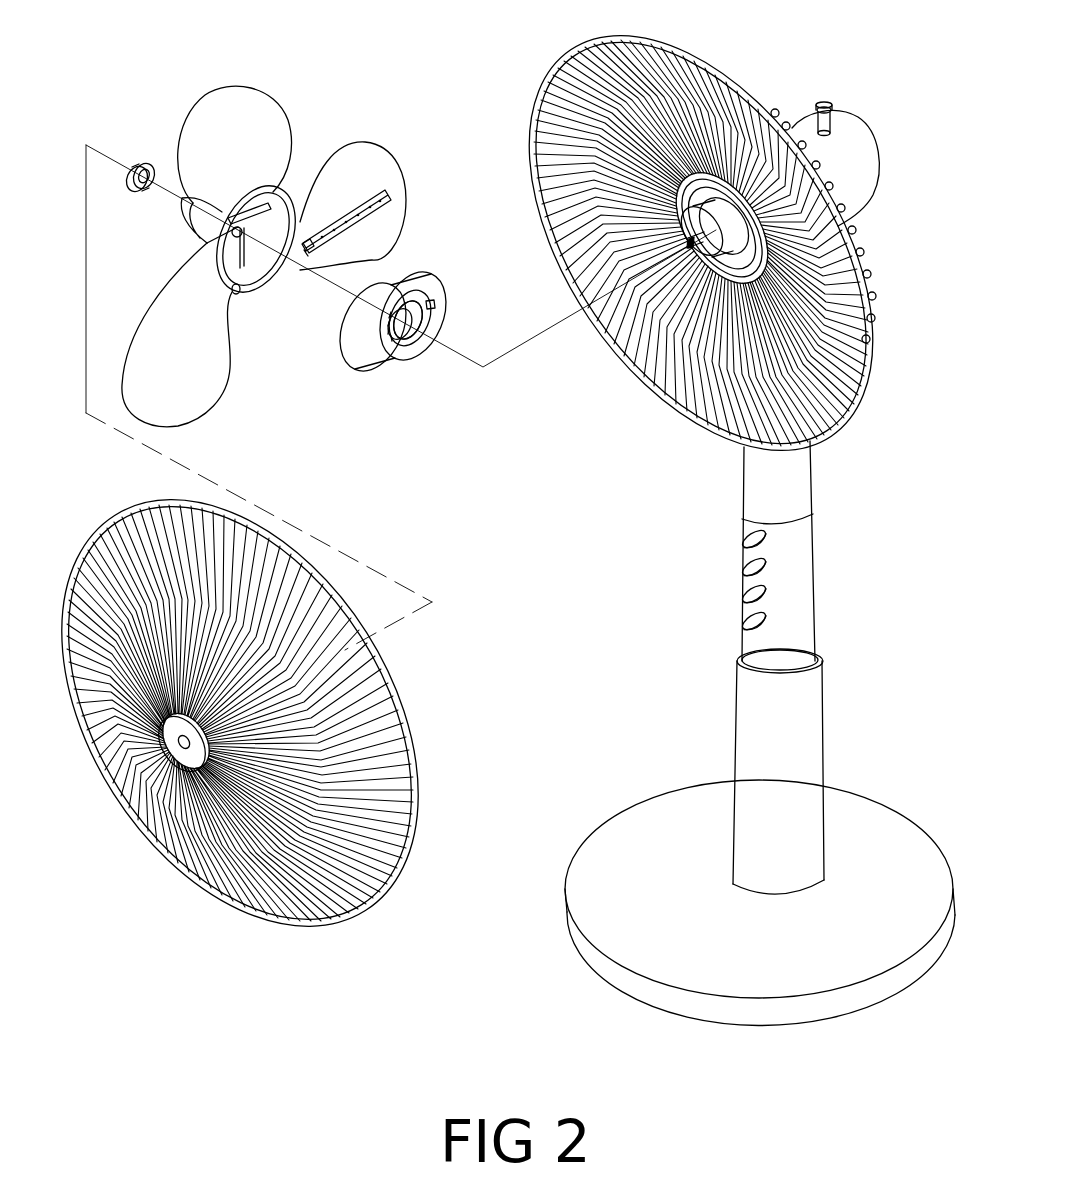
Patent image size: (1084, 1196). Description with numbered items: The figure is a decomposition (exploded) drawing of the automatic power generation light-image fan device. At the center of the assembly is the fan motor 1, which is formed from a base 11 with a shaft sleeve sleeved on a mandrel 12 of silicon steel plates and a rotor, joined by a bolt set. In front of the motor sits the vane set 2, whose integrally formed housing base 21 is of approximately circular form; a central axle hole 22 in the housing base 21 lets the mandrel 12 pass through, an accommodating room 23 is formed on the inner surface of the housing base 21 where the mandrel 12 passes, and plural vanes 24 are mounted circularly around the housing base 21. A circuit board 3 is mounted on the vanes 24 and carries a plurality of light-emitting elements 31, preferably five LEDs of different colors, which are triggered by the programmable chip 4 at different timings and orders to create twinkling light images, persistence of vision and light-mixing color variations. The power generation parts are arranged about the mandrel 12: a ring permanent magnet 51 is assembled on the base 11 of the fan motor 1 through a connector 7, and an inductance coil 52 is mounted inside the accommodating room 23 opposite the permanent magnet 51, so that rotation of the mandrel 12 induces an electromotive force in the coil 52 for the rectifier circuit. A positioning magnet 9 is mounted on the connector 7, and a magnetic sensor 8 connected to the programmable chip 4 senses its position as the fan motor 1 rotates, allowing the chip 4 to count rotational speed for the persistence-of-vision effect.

The fan motor 1 is at (834, 179).
The base 11 is at (852, 198).
The mandrel 12 is at (600, 327).
The vane set 2 is at (164, 153).
The housing base 21 is at (205, 222).
The axle hole 22 is at (232, 262).
The accommodating room 23 is at (305, 218).
The vanes 24 is at (250, 105).
The circuit board 3 is at (386, 195).
The light-emitting elements 31 is at (392, 205).
The programmable chip 4 is at (318, 252).
The permanent magnet 51 is at (735, 302).
The inductance coil 52 is at (238, 290).
The connector 7 is at (698, 226).
The magnetic sensor 8 is at (434, 304).
The positioning magnet 9 is at (720, 166).